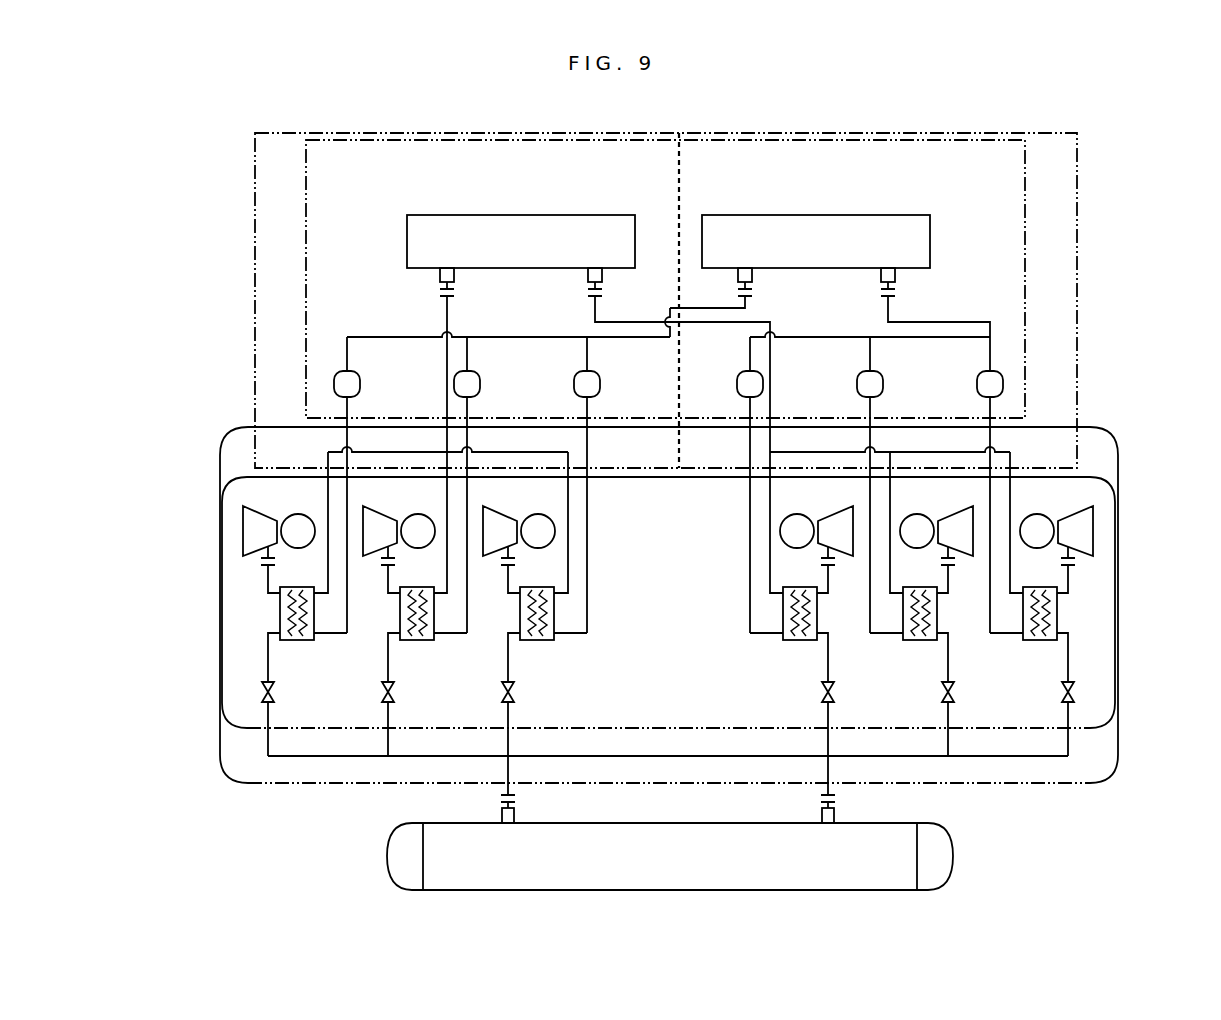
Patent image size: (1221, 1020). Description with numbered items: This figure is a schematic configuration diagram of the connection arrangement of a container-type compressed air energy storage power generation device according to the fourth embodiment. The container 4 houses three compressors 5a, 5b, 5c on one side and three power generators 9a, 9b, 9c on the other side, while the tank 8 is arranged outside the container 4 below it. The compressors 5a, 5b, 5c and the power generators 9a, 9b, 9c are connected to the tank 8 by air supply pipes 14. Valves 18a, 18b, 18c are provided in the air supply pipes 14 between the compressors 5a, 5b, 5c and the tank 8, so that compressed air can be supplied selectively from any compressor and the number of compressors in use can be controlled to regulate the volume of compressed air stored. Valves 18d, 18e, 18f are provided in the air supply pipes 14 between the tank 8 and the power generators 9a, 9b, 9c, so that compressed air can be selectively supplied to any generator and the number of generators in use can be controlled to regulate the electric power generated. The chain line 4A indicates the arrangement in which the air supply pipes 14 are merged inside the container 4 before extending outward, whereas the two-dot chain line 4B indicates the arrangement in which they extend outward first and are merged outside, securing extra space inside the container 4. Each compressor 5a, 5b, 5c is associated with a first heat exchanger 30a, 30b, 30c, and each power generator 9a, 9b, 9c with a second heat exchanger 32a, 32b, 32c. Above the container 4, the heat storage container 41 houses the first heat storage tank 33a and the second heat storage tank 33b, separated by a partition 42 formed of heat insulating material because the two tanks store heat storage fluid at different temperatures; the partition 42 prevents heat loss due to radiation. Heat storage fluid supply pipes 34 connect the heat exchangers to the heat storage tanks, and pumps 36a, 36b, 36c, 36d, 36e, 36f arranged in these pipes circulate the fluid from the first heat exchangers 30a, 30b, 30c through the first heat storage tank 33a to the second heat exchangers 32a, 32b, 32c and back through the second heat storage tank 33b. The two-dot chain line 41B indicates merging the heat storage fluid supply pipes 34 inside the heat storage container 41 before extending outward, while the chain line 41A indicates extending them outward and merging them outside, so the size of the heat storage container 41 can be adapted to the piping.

The container 4 is at (1120, 622).
The chain line 4A is at (1097, 783).
The two-dot chain line 4B is at (1110, 722).
The compressor 5a is at (254, 580).
The compressor 5b is at (374, 580).
The compressor 5c is at (494, 580).
The tank 8 is at (953, 862).
The power generator 9a is at (849, 571).
The power generator 9b is at (969, 571).
The power generator 9c is at (1091, 574).
The air supply pipe 14 is at (512, 745).
The valve 18a is at (275, 692).
The valve 18b is at (395, 692).
The valve 18c is at (515, 692).
The valve 18d is at (822, 692).
The valve 18e is at (942, 692).
The valve 18f is at (1062, 692).
The first heat exchanger 30a is at (280, 622).
The first heat exchanger 30b is at (400, 622).
The first heat exchanger 30c is at (520, 622).
The second heat exchanger 32a is at (817, 611).
The second heat exchanger 32b is at (937, 611).
The second heat exchanger 32c is at (1057, 611).
The first heat storage tank 33a is at (530, 215).
The second heat storage tank 33b is at (818, 215).
The heat storage fluid supply pipe 34 is at (442, 325).
The pump 36a is at (360, 378).
The pump 36b is at (480, 378).
The pump 36c is at (600, 378).
The pump 36d is at (737, 378).
The pump 36e is at (857, 378).
The pump 36f is at (977, 378).
The heat storage container 41 is at (232, 172).
The chain line 41A is at (305, 238).
The two-dot chain line 41B is at (255, 295).
The partition 42 is at (675, 450).